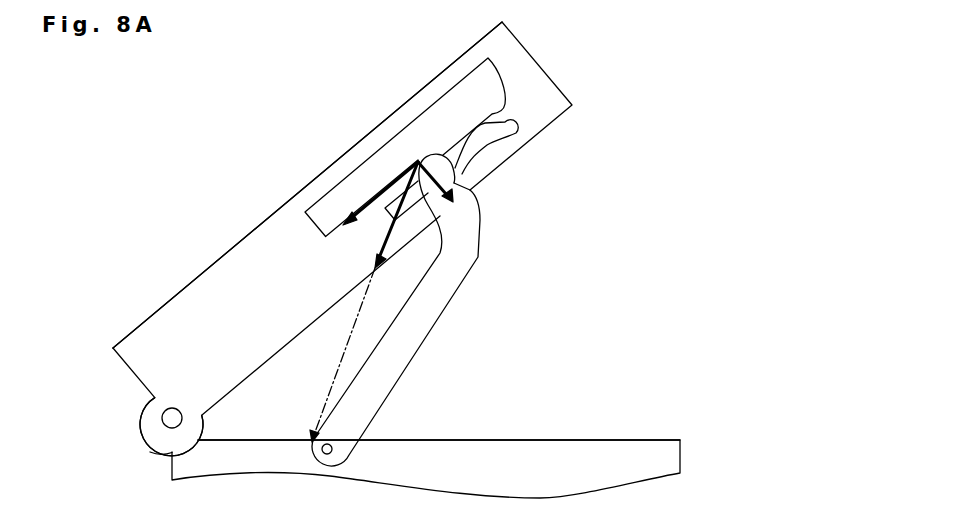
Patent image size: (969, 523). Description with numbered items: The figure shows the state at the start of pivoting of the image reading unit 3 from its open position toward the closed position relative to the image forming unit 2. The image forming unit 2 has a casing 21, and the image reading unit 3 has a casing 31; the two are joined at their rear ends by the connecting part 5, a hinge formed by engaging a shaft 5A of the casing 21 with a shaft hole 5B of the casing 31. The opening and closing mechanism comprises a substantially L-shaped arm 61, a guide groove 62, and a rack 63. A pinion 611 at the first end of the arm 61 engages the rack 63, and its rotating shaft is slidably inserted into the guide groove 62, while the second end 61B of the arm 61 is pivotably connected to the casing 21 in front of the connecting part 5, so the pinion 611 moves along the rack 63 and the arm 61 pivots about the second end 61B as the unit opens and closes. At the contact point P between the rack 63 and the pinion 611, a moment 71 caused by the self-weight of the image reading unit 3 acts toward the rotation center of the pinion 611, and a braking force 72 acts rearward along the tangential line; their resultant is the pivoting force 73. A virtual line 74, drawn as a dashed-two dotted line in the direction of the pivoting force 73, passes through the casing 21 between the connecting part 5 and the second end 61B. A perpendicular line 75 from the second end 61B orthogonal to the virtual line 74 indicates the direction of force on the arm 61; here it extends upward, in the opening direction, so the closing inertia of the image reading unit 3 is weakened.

The image forming unit 2 is at (612, 413).
The casing 21 is at (553, 440).
The image reading unit 3 is at (163, 288).
The casing 31 is at (192, 281).
The connecting part 5 is at (140, 430).
The shaft 5A is at (167, 418).
The shaft hole 5B is at (150, 452).
The arm 61 is at (444, 312).
The pinion 611 is at (458, 178).
The second end 61B is at (332, 445).
The guide groove 62 is at (522, 130).
The rack 63 is at (415, 118).
The moment 71 is at (465, 188).
The braking force 72 is at (360, 215).
The pivoting force 73 is at (380, 236).
The virtual line 74 is at (338, 347).
The perpendicular line 75 is at (311, 442).
The contact point P is at (417, 160).